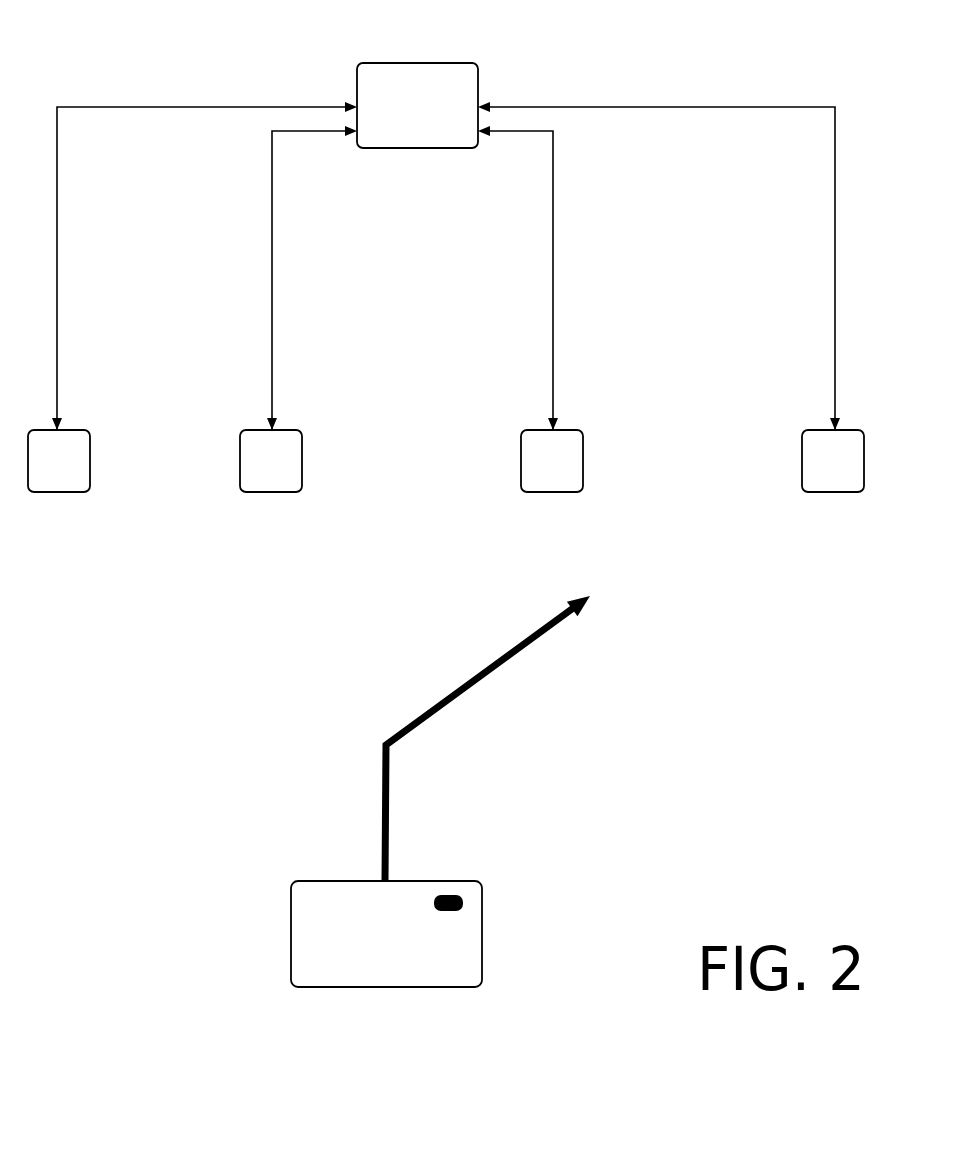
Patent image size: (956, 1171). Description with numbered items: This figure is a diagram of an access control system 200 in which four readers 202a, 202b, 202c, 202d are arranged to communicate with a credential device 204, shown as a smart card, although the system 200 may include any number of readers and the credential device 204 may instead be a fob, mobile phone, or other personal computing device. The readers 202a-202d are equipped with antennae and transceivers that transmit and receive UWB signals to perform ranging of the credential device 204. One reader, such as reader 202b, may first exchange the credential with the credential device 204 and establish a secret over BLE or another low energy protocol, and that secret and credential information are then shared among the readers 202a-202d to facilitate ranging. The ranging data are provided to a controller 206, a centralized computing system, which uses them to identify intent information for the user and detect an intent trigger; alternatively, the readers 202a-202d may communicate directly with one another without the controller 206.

The access control system 200 is at (700, 40).
The reader 202a is at (864, 448).
The reader 202b is at (583, 448).
The reader 202c is at (302, 448).
The reader 202d is at (90, 448).
The credential device 204 is at (482, 932).
The controller 206 is at (478, 82).